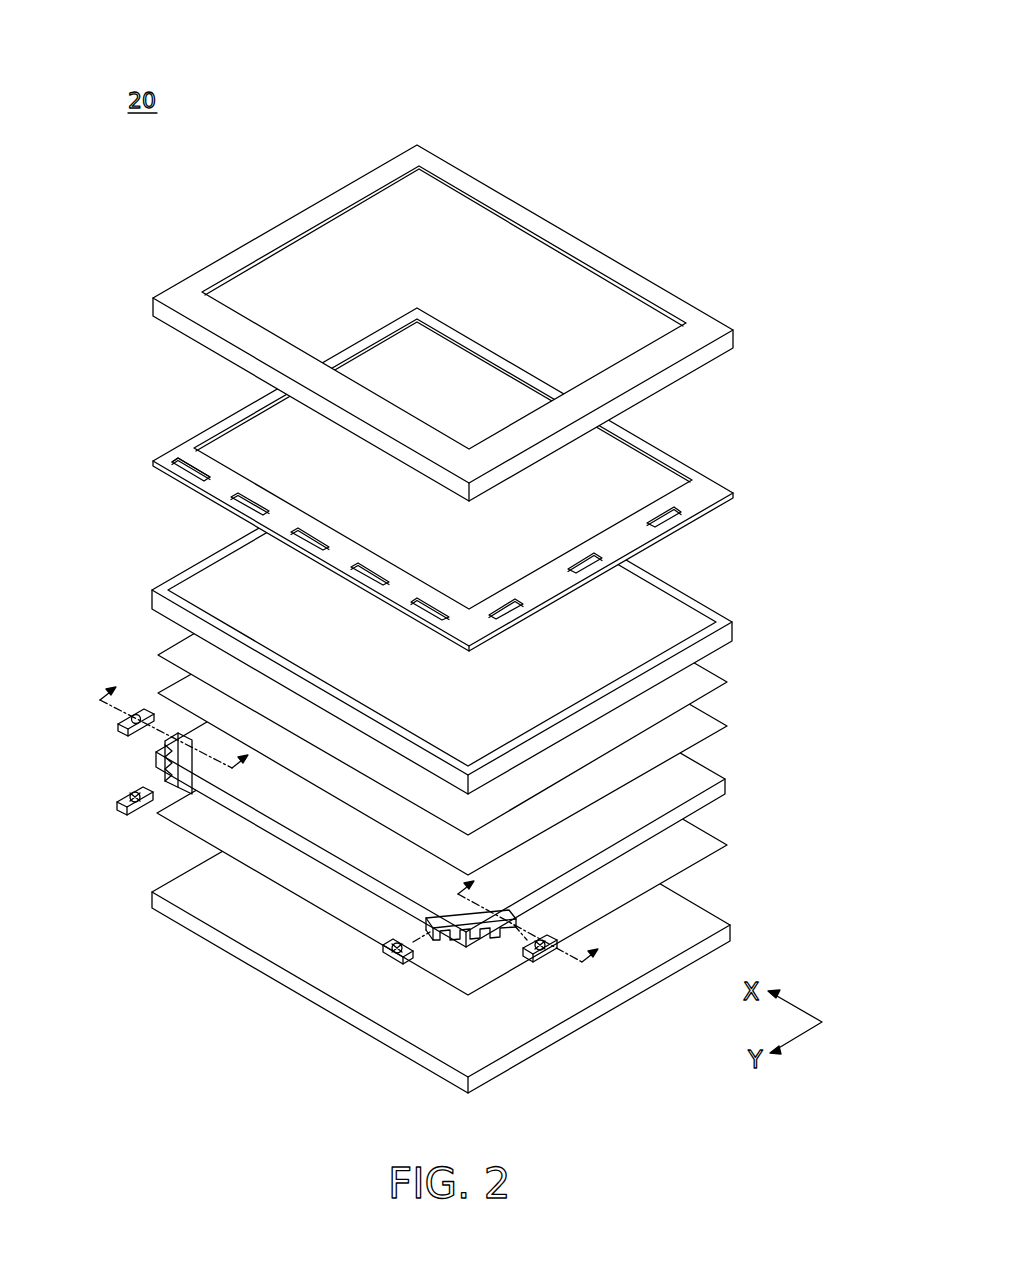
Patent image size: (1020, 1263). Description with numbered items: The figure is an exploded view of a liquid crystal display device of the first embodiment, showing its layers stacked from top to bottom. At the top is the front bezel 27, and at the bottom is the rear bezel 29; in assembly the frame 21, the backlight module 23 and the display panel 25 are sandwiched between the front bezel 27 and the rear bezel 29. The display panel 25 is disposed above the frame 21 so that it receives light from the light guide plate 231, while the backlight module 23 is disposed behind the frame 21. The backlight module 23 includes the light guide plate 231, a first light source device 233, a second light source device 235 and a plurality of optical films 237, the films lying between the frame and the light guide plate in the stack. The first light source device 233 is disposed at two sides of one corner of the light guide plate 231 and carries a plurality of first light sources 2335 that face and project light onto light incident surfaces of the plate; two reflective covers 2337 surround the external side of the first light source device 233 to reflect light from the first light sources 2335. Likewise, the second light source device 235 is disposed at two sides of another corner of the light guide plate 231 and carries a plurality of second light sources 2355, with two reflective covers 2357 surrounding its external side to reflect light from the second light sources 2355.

The frame 21 is at (732, 632).
The backlight module 23 is at (444, 562).
The display panel 25 is at (733, 498).
The front bezel 27 is at (733, 338).
The rear bezel 29 is at (731, 932).
The light guide plate 231 is at (726, 785).
The first light source device 233 is at (386, 958).
The second light source device 235 is at (103, 733).
The optical films 237 is at (735, 682).
The first light sources 2335 is at (398, 965).
The reflective covers 2337 is at (544, 965).
The second light sources 2355 is at (135, 815).
The reflective covers 2357 is at (140, 707).